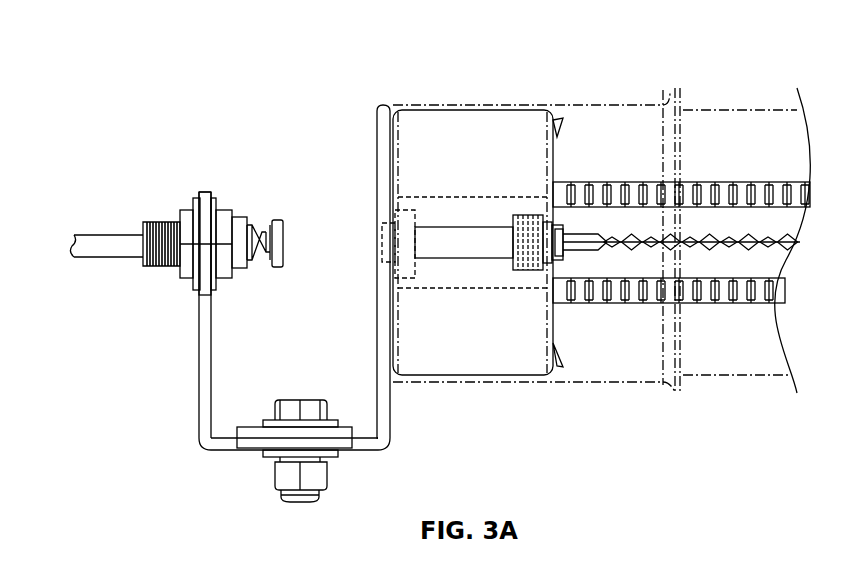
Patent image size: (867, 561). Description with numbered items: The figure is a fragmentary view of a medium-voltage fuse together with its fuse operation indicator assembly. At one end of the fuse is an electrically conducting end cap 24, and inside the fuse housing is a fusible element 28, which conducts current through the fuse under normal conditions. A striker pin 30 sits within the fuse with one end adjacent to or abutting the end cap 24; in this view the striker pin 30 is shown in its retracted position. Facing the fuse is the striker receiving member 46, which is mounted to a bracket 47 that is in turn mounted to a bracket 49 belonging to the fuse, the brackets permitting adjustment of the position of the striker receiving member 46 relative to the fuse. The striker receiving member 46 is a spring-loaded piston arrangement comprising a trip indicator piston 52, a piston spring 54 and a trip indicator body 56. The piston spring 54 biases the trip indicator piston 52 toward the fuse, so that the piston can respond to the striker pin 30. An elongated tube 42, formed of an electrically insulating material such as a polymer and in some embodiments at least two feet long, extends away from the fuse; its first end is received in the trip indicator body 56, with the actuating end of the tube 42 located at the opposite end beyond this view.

The end cap 24 is at (467, 105).
The fusible element 28 is at (738, 240).
The striker pin 30 is at (467, 227).
The tube 42 is at (93, 234).
The striker receiving member 46 is at (188, 165).
The bracket 47 is at (199, 391).
The bracket 49 is at (388, 418).
The trip indicator piston 52 is at (278, 219).
The piston spring 54 is at (259, 226).
The trip indicator body 56 is at (160, 268).